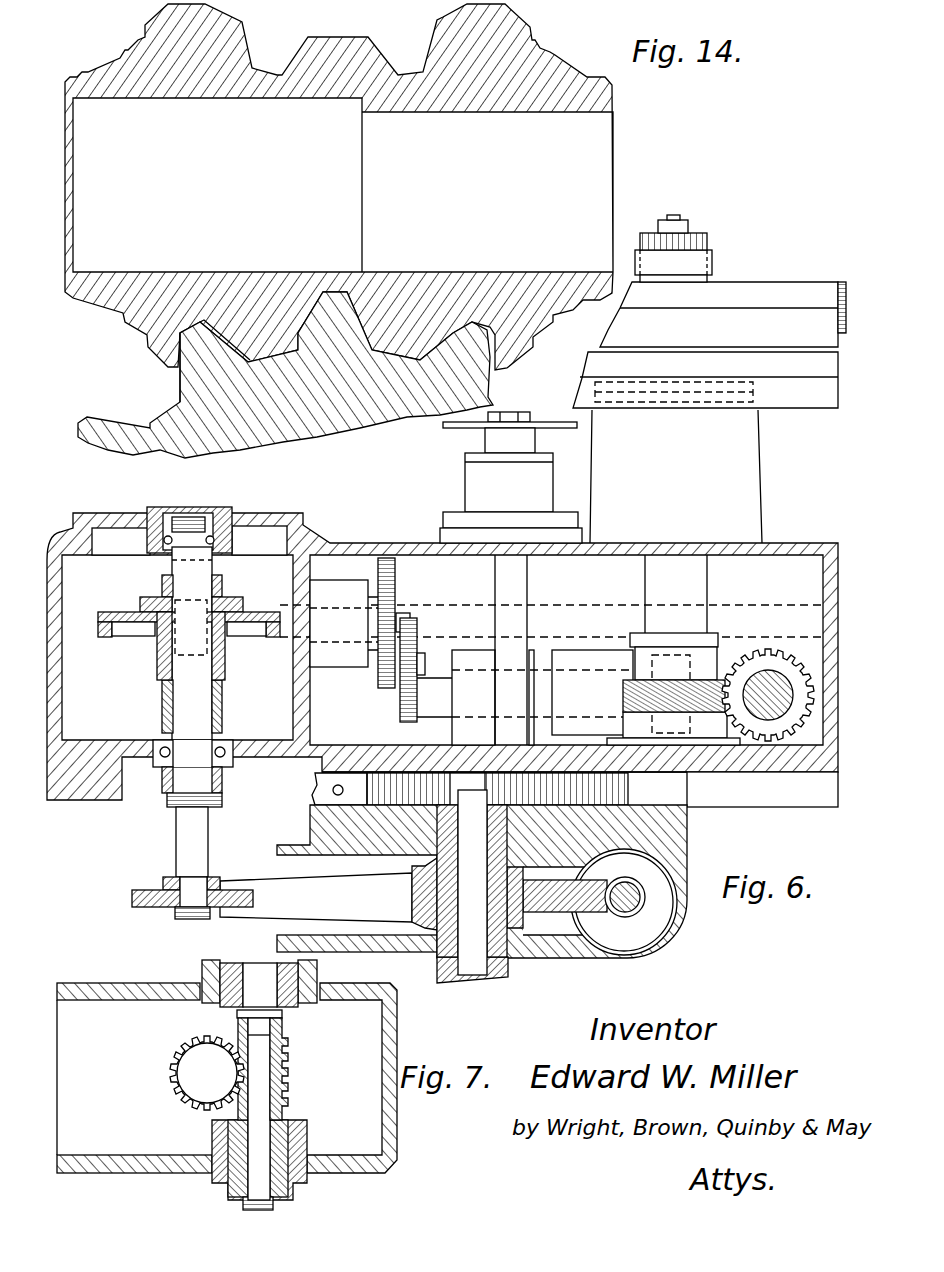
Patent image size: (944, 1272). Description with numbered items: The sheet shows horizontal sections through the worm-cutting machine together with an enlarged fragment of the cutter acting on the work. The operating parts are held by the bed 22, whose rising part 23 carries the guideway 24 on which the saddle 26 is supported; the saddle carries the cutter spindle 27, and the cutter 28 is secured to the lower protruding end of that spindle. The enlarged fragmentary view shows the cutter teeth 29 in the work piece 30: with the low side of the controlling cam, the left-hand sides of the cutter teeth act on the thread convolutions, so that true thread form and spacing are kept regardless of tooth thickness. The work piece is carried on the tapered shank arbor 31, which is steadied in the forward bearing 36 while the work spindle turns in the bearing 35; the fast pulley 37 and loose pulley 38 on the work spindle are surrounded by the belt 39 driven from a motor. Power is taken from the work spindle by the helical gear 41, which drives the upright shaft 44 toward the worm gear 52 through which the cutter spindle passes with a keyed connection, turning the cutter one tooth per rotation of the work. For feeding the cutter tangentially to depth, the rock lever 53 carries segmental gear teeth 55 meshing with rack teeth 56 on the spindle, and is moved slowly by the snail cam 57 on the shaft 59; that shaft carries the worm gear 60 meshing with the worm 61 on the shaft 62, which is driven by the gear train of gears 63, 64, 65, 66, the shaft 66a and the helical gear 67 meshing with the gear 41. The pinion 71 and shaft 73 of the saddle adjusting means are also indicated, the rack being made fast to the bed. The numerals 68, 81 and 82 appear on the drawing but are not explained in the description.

In FIG. 7, the bed 22 is at (392, 1038).
In FIG. 6, the rising part of the bed 23 is at (747, 757).
In FIG. 6, the guideway 24 is at (810, 790).
In FIG. 6, the saddle 26 is at (663, 840).
In FIG. 6, the cutter spindle 27 is at (640, 905).
In FIG. 14, the cutter 28 is at (263, 420).
In FIG. 7, the cutter 28 is at (182, 1095).
In FIG. 14, the cutter teeth 29 is at (213, 362).
In FIG. 14, the work piece 30 is at (140, 322).
In FIG. 7, the work piece 30 is at (280, 1077).
In FIG. 7, the tapered shank arbor 31 is at (258, 1065).
In FIG. 7, the bearing 35 is at (313, 970).
In FIG. 7, the forward bearing 36 is at (237, 1163).
In FIG. 6, the fast pulley 37 is at (795, 400).
In FIG. 6, the loose pulley 38 is at (730, 288).
In FIG. 6, the belt 39 is at (843, 278).
In FIG. 6, the helical gear 41 is at (720, 670).
In FIG. 6, the upright shaft 44 is at (768, 687).
In FIG. 7, the worm gear 52 is at (213, 967).
In FIG. 6, the rock lever 53 is at (310, 897).
In FIG. 6, the segmental gear teeth 55 is at (593, 897).
In FIG. 6, the rack teeth 56 is at (616, 917).
In FIG. 6, the snail cam 57 is at (165, 897).
In FIG. 6, the shaft 59 is at (193, 828).
In FIG. 6, the worm gear 60 is at (107, 635).
In FIG. 6, the worm 61 is at (173, 647).
In FIG. 6, the shaft 62 is at (290, 633).
In FIG. 6, the gear of gear train 63 is at (388, 600).
In FIG. 6, the gear of gear train 64 is at (388, 670).
In FIG. 6, the gear of gear train 65 is at (410, 648).
In FIG. 6, the gear of gear train 66 is at (407, 720).
In FIG. 6, the shaft 66a is at (547, 677).
In FIG. 6, the helical gear 67 is at (708, 637).
In FIG. 6, the rack 68 is at (607, 789).
In FIG. 6, the pinion 71 is at (477, 773).
In FIG. 6, the shaft 73 is at (470, 888).
In FIG. 6, the bolt and clamp 81 is at (463, 432).
In FIG. 6, the partition plate 82 is at (513, 608).